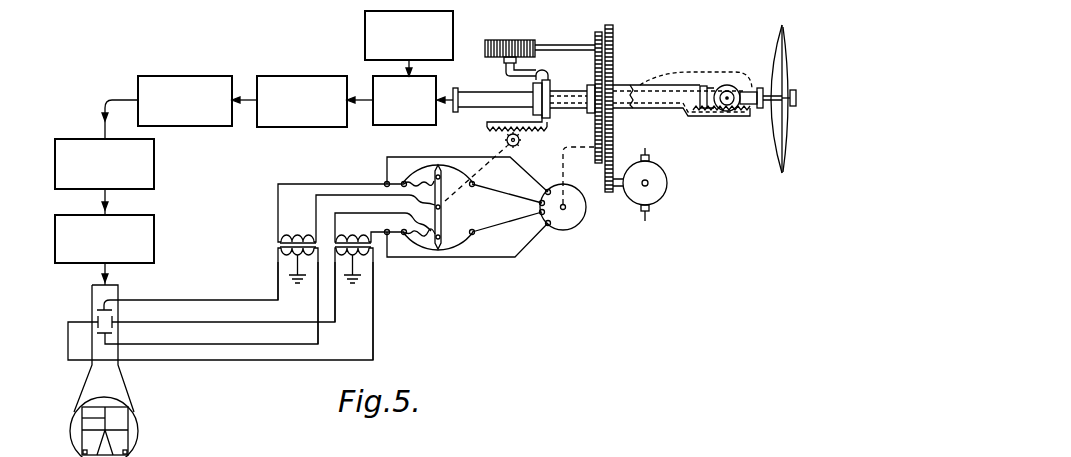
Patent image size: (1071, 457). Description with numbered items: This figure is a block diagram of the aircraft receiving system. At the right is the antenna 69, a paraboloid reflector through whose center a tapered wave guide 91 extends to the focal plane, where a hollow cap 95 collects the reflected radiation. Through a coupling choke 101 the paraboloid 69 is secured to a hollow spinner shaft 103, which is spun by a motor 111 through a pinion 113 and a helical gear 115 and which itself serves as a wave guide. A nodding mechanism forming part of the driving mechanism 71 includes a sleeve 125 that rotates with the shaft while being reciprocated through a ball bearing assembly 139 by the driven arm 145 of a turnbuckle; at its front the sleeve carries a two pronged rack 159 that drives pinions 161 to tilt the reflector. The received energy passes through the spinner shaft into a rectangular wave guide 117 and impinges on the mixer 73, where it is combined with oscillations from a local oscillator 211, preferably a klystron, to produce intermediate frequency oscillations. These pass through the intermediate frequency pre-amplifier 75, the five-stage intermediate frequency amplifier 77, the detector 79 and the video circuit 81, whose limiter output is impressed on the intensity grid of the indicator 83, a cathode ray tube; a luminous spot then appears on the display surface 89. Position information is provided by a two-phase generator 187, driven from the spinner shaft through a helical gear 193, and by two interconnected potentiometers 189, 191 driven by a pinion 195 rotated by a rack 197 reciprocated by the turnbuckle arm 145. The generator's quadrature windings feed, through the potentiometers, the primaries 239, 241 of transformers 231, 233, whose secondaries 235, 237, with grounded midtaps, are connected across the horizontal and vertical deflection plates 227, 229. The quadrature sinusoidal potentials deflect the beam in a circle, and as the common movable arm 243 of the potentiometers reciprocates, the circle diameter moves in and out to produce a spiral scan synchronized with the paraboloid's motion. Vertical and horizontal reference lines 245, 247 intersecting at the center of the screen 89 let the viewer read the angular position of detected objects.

The antenna 69 is at (772, 109).
The driving mechanism 71 is at (621, 55).
The mixer 73 is at (418, 117).
The intermediate frequency pre-amplifier 75 is at (293, 76).
The intermediate frequency amplifier 77 is at (182, 76).
The detector 79 is at (78, 138).
The video circuit 81 is at (55, 221).
The indicator 83 is at (162, 393).
The display surface 89 is at (135, 427).
The tapered wave guide 91 is at (788, 90).
The hollow cap 95 is at (781, 173).
The coupling choke 101 is at (756, 88).
The hollow spinner shaft 103 is at (688, 87).
The motor 111 is at (660, 203).
The pinion 113 is at (609, 193).
The helical gear 115 is at (610, 25).
The rectangular wave guide 117 is at (488, 80).
The sleeve 125 is at (640, 85).
The ball bearing assembly 139 is at (551, 88).
The driven arm 145 is at (528, 74).
The two pronged rack 159 is at (727, 117).
The pinions 161 is at (725, 84).
The two-phase generator 187 is at (582, 218).
The potentiometer 189 is at (414, 171).
The potentiometer 191 is at (468, 238).
The helical gear 193 is at (593, 160).
The pinion 195 is at (519, 146).
The rack 197 is at (548, 121).
The local oscillator 211 is at (453, 30).
The horizontal deflection plates 227 is at (97, 318).
The vertical deflection plates 229 is at (110, 300).
The transformer 231 is at (373, 262).
The transformer 233 is at (260, 253).
The secondary 235 is at (344, 266).
The secondary 237 is at (278, 264).
The primary 239 is at (353, 224).
The primary 241 is at (311, 226).
The common movable arm 243 is at (444, 210).
The vertical reference line 245 is at (82, 418).
The horizontal reference line 247 is at (117, 431).